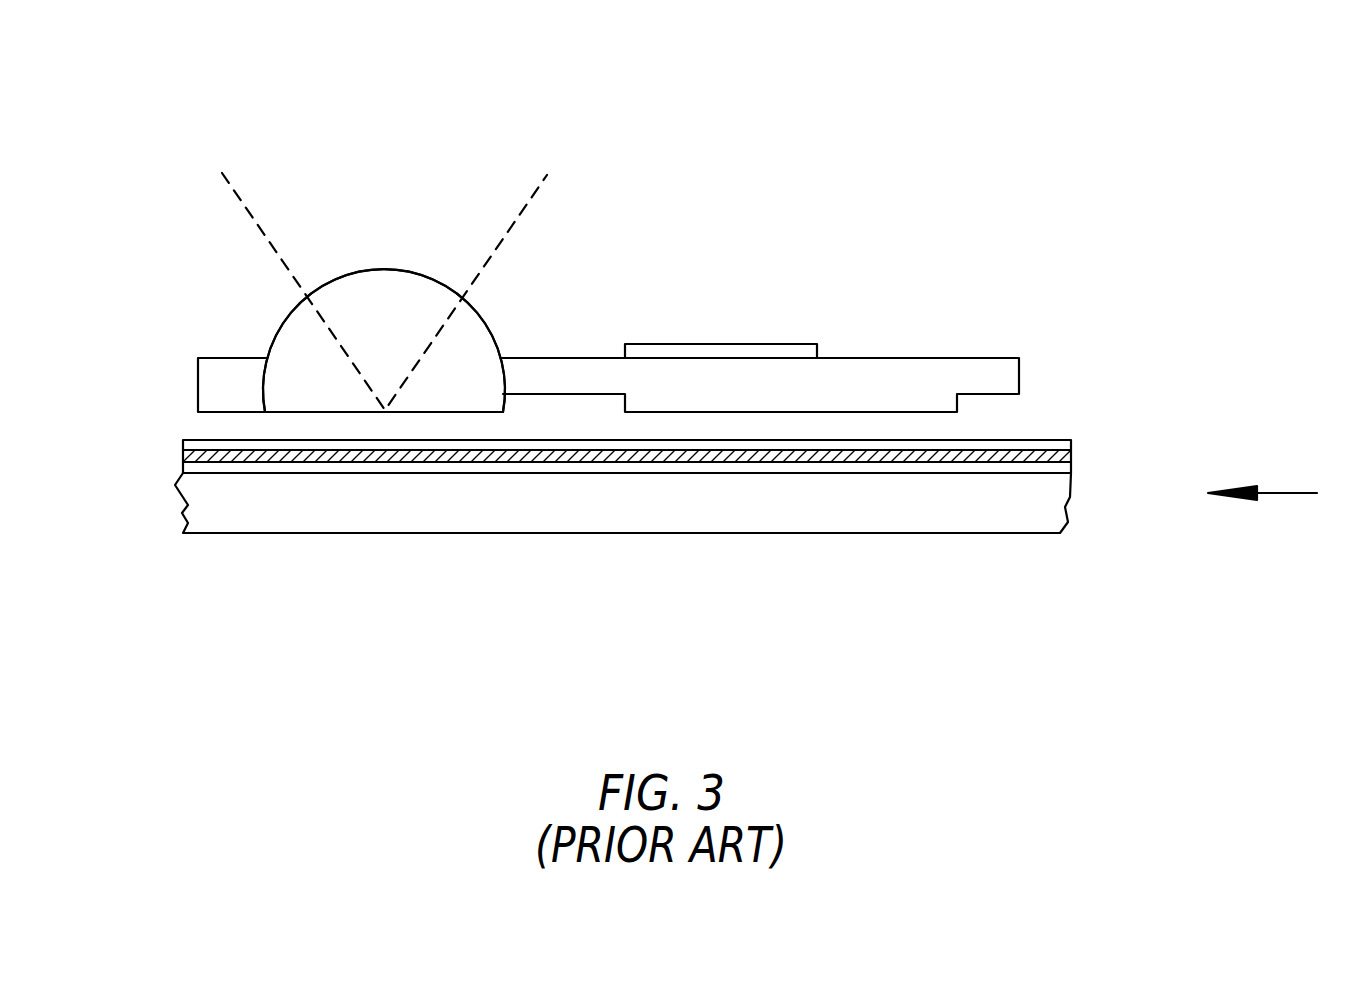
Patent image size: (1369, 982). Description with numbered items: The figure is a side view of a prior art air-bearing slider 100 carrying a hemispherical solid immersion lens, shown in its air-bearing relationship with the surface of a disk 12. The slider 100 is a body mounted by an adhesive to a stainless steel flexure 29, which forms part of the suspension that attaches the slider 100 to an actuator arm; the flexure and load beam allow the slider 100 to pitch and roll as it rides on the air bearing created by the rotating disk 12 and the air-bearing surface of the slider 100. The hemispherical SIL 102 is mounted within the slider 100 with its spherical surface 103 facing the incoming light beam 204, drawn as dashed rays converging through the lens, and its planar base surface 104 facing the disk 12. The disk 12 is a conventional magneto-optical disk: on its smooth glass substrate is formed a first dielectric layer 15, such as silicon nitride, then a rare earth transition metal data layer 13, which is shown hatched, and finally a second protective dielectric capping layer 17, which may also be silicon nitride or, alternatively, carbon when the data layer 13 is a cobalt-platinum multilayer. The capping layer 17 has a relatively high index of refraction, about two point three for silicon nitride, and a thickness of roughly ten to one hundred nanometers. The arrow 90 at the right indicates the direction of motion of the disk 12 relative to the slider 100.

The disk 12 is at (875, 513).
The data layer 13 is at (1073, 453).
The first dielectric layer 15 is at (1073, 467).
The capping layer 17 is at (1057, 440).
The flexure 29 is at (743, 344).
The arrow 90 is at (1278, 493).
The air-bearing slider 100 is at (897, 387).
The hemispherical SIL 102 is at (468, 338).
The spherical surface 103 is at (350, 273).
The planar base surface 104 is at (440, 412).
The light beam 204 is at (500, 243).